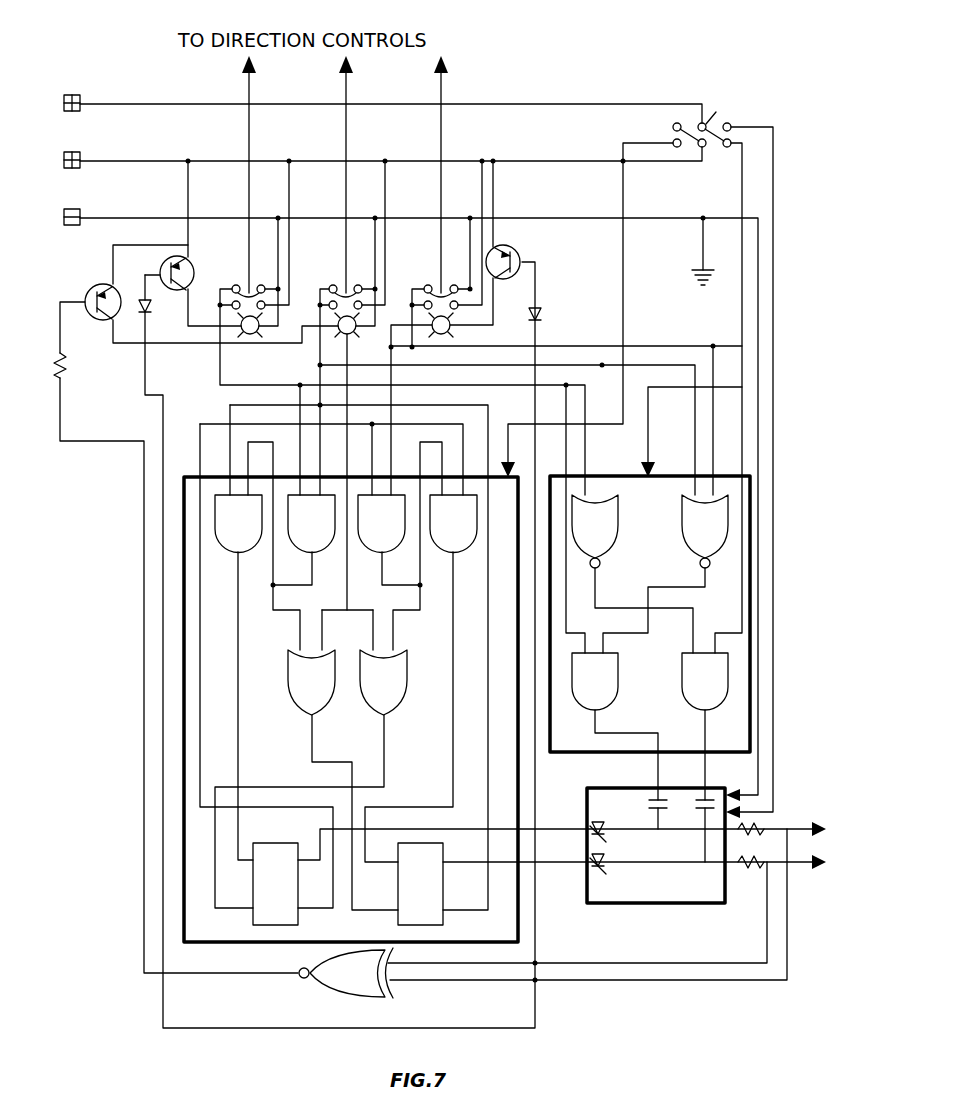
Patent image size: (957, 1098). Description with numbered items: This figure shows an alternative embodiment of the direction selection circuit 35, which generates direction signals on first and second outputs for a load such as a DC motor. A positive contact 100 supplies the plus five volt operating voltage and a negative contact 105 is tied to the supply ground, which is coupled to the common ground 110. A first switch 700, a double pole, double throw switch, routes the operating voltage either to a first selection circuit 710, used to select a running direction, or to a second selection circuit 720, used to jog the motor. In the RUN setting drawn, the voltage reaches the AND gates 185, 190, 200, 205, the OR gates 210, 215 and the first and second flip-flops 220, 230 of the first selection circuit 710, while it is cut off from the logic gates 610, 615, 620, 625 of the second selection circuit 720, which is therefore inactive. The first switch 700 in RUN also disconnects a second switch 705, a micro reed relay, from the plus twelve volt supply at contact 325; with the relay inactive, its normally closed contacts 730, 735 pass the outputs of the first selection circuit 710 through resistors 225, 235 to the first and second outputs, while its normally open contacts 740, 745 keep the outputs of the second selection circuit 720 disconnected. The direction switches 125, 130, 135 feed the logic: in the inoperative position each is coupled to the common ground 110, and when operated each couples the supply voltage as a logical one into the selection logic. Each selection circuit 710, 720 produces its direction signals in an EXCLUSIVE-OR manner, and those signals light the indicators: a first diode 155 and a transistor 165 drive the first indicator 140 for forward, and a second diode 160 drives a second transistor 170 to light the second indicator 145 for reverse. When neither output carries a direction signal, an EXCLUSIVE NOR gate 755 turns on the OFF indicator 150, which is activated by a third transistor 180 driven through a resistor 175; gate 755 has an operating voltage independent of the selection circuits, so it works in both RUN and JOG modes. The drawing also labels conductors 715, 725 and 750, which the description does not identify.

The contact 325 is at (70, 96).
The positive contact 100 is at (66, 158).
The negative contact 105 is at (66, 215).
The second transistor 170 is at (162, 268).
The third transistor 180 is at (96, 292).
The resistor 175 is at (60, 362).
The second diode 160 is at (142, 334).
The second switch 130 is at (260, 282).
The third switch 135 is at (336, 288).
The second indicator 145 is at (252, 336).
The third indicator 150 is at (343, 336).
The first switch 125 is at (430, 284).
The first indicator 140 is at (450, 340).
The transistor 165 is at (507, 250).
The first diode 155 is at (537, 320).
The conductor 715 is at (620, 156).
The first switch 700 is at (716, 118).
The conductor 750 is at (756, 126).
The conductor 725 is at (754, 170).
The common ground 110 is at (708, 286).
The AND gate 190 is at (215, 548).
The AND gate 200 is at (304, 560).
The AND gate 205 is at (372, 560).
The AND gate 185 is at (446, 560).
The OR gate 210 is at (300, 712).
The OR gate 215 is at (378, 712).
The first flip-flop 220 is at (416, 928).
The second flip-flop 230 is at (260, 928).
The first selection circuit 710 is at (183, 874).
The EXCLUSIVE NOR gate 755 is at (320, 992).
The logic gate 610 is at (600, 568).
The logic gate 615 is at (728, 548).
The logic gate 620 is at (595, 710).
The logic gate 625 is at (728, 705).
The second selection circuit 720 is at (754, 510).
The contact 740 is at (648, 798).
The contact 745 is at (710, 798).
The resistor 235 is at (762, 822).
The contact 730 is at (598, 824).
The contact 735 is at (598, 870).
The second switch 705 is at (640, 908).
The resistor 225 is at (750, 870).
The direction selection circuit 35 is at (728, 1002).